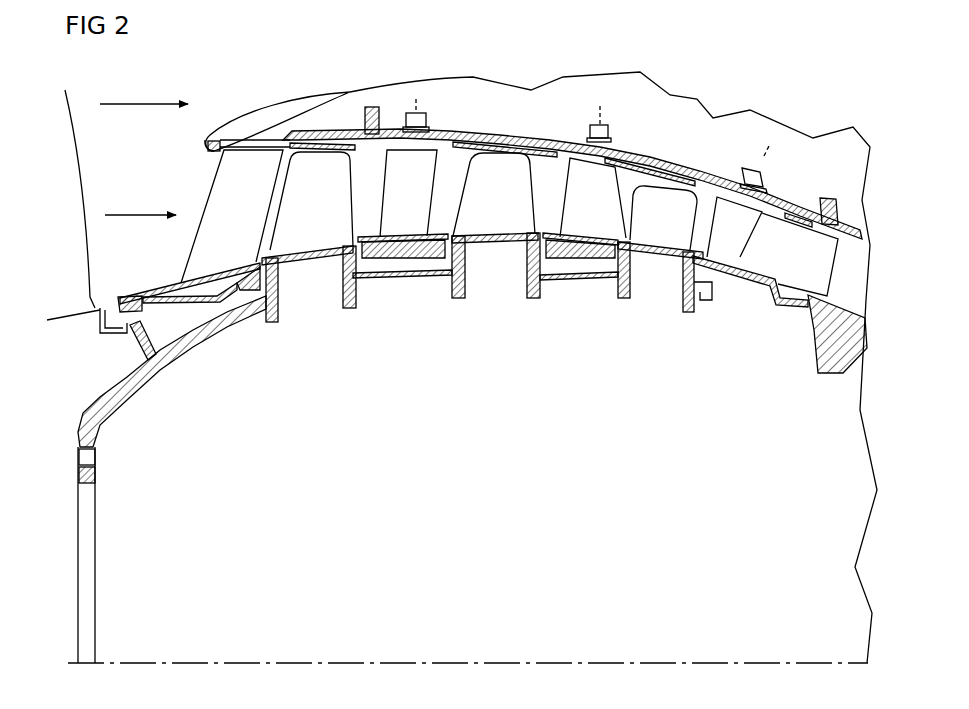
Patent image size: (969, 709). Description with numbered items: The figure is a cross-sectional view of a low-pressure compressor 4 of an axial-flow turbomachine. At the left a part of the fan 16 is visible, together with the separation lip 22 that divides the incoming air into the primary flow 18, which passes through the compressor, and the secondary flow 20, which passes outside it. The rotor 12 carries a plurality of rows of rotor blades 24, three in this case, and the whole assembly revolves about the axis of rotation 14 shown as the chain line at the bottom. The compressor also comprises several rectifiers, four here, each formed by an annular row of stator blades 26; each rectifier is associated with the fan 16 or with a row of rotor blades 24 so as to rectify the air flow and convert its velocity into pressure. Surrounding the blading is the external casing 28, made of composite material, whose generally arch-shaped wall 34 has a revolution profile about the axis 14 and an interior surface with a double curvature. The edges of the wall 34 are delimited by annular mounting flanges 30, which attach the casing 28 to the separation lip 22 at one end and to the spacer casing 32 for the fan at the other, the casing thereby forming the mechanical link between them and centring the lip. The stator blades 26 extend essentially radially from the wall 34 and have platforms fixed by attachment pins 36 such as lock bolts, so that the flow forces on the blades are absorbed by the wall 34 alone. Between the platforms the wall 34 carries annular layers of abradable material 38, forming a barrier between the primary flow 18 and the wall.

The low-pressure compressor 4 is at (779, 89).
The rotor 12 is at (97, 447).
The axis of rotation 14 is at (577, 661).
The fan 16 is at (70, 216).
The primary flow 18 is at (140, 201).
The secondary flow 20 is at (144, 90).
The separation lip 22 is at (200, 147).
The rotor blades 24 is at (305, 216).
The stator blades 26 is at (221, 221).
The casing 28 is at (688, 110).
The mounting flanges 30 is at (370, 106).
The spacer casing 32 is at (828, 374).
The wall 34 is at (546, 132).
The attachment pins 36 is at (425, 118).
The annular layers of abradable material 38 is at (470, 152).